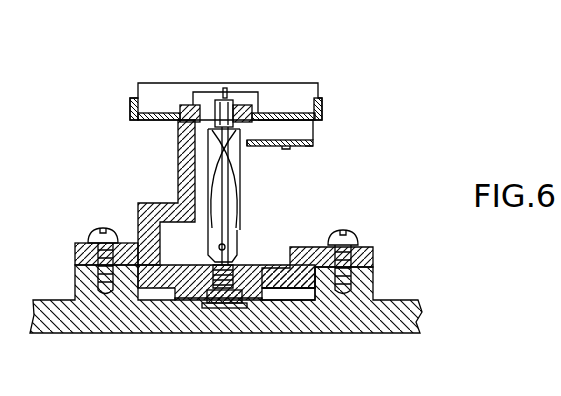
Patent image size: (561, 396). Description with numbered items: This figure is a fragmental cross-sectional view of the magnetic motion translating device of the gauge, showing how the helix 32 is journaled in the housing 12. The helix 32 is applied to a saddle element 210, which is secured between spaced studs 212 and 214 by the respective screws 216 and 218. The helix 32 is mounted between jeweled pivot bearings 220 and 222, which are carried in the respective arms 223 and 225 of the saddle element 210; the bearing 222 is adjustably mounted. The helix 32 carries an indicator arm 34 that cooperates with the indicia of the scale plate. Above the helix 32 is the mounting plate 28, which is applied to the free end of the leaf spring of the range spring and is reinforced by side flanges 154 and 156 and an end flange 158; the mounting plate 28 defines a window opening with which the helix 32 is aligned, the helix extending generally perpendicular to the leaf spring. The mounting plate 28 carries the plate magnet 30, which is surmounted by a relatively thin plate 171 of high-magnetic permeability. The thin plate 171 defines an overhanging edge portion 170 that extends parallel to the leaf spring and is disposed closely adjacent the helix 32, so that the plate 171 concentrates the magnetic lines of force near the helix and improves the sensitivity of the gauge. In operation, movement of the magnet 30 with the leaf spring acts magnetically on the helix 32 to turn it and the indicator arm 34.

The housing 12 is at (62, 125).
The mounting plate 28 is at (315, 114).
The plate magnet 30 is at (302, 131).
The helix 32 is at (243, 205).
The indicator arm 34 is at (238, 244).
The side flange 154 is at (150, 102).
The side flange 156 is at (313, 100).
The end flange 158 is at (177, 88).
The overhanging edge portion 170 is at (245, 143).
The thin plate of high-magnetic permeability 171 is at (303, 147).
The saddle element 210 is at (178, 177).
The stud 212 is at (366, 290).
The stud 214 is at (75, 290).
The screw 216 is at (355, 238).
The screw 218 is at (95, 240).
The jeweled pivot bearing 220 is at (212, 111).
The jeweled pivot bearing 222 is at (187, 292).
The arm of the saddle 223 is at (195, 112).
The arm of the saddle 225 is at (297, 287).